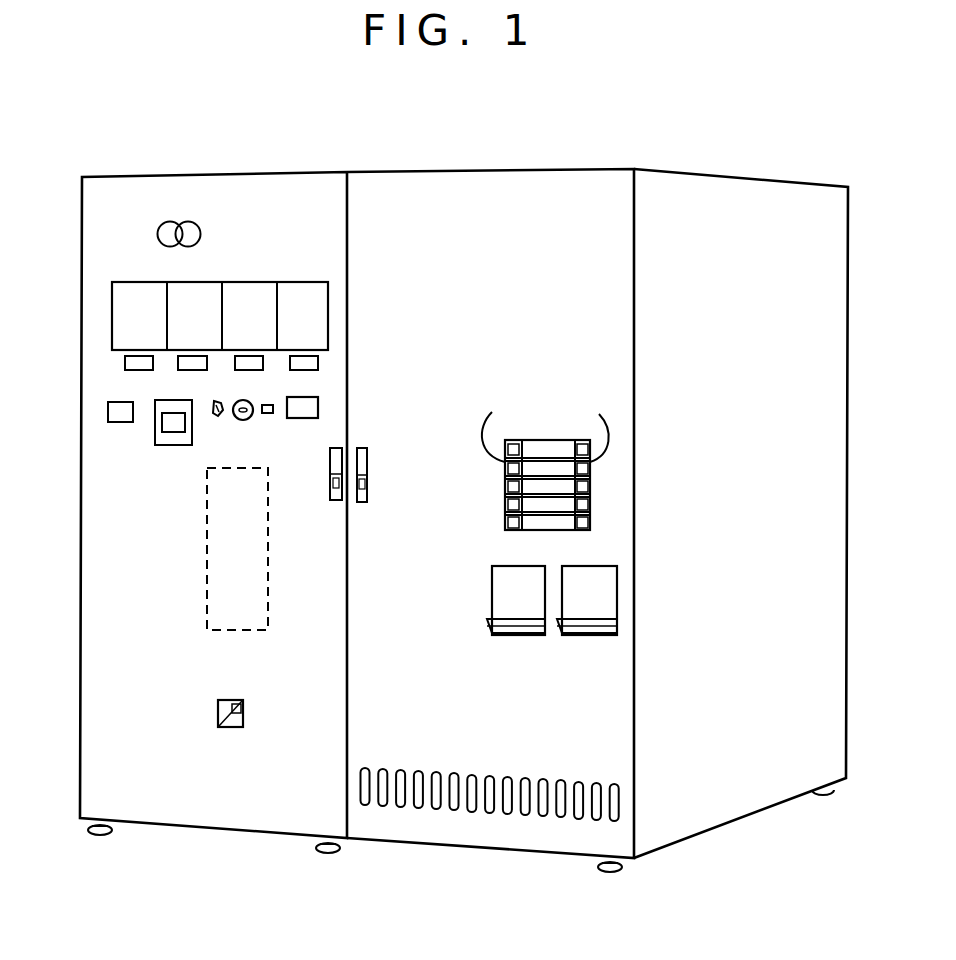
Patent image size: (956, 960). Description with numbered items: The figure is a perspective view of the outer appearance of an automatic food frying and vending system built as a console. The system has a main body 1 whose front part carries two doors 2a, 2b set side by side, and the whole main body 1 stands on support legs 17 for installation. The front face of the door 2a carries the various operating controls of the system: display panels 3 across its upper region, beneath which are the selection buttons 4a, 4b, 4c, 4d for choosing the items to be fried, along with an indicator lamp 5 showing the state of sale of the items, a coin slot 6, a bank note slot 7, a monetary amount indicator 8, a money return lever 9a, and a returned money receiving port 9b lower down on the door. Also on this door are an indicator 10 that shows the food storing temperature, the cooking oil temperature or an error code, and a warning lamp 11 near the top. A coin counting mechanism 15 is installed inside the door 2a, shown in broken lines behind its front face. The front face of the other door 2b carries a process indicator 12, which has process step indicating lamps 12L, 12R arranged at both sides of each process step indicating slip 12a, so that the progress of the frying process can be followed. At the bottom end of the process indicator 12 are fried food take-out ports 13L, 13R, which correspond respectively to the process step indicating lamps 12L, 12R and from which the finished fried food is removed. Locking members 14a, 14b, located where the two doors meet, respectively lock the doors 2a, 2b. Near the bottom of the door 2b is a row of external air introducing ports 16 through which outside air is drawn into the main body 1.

The main body 1 is at (501, 169).
The door 2a is at (100, 356).
The door 2b is at (598, 184).
The display panels 3 is at (253, 282).
The selection button 4a is at (125, 363).
The selection button 4b is at (192, 358).
The selection button 4c is at (247, 358).
The selection button 4d is at (318, 364).
The indicator lamp 5 is at (270, 413).
The coin slot 6 is at (243, 420).
The bank note slot 7 is at (172, 432).
The monetary amount indicator 8 is at (318, 410).
The money return lever 9a is at (217, 417).
The returned money receiving port 9b is at (243, 700).
The indicator 10 is at (120, 422).
The warning lamp 11 is at (183, 223).
The process indicator 12 is at (543, 440).
The process step indicating lamp 12L is at (492, 424).
The process step indicating lamp 12R is at (602, 424).
The process step indicating slip 12a is at (540, 512).
The fried food take-out port 13L is at (522, 610).
The fried food take-out port 13R is at (593, 610).
The locking member 14a is at (332, 492).
The locking member 14b is at (367, 455).
The coin counting mechanism 15 is at (212, 572).
The external air introducing ports 16 is at (598, 788).
The support legs 17 is at (102, 836).